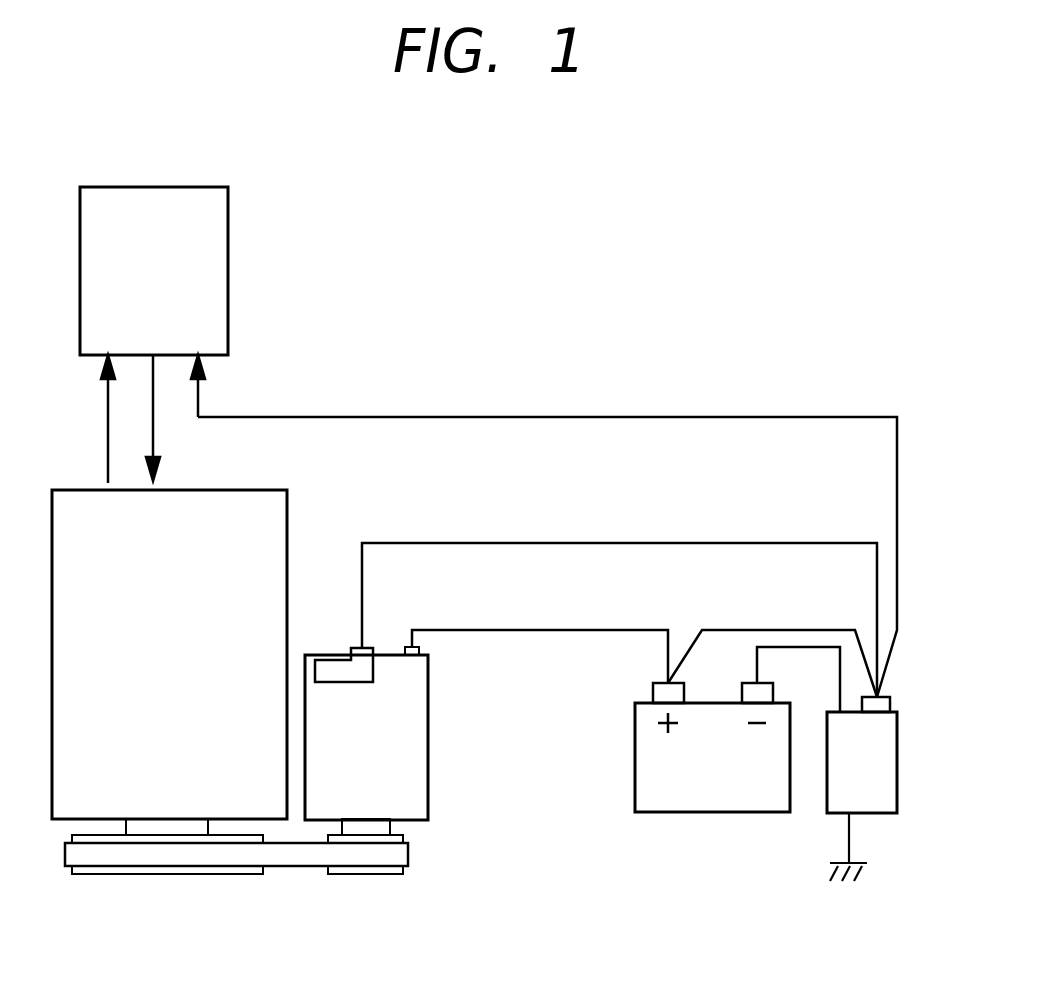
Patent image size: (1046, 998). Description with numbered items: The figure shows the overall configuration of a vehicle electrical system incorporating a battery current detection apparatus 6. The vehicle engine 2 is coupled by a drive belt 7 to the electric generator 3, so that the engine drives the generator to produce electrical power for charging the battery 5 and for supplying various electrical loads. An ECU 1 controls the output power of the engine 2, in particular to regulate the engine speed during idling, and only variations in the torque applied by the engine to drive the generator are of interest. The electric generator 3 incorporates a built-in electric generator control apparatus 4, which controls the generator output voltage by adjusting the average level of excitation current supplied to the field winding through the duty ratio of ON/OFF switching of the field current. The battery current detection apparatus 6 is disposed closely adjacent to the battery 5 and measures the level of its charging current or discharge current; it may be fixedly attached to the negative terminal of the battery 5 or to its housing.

The ECU 1 is at (200, 187).
The vehicle engine 2 is at (252, 490).
The electric generator 3 is at (428, 787).
The electric generator control apparatus 4 is at (331, 672).
The battery 5 is at (635, 723).
The battery current detection apparatus 6 is at (897, 722).
The drive belt 7 is at (307, 866).